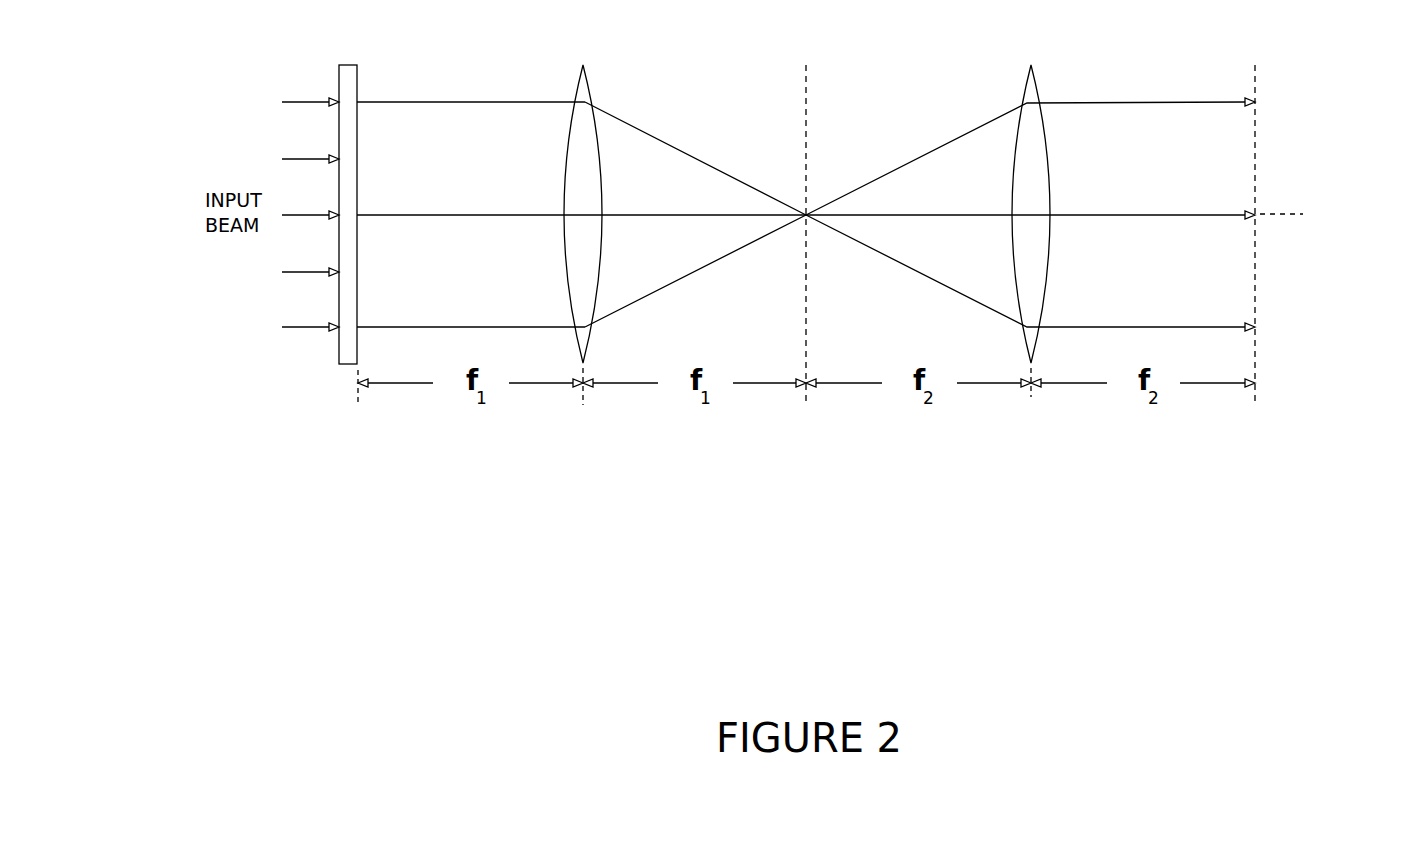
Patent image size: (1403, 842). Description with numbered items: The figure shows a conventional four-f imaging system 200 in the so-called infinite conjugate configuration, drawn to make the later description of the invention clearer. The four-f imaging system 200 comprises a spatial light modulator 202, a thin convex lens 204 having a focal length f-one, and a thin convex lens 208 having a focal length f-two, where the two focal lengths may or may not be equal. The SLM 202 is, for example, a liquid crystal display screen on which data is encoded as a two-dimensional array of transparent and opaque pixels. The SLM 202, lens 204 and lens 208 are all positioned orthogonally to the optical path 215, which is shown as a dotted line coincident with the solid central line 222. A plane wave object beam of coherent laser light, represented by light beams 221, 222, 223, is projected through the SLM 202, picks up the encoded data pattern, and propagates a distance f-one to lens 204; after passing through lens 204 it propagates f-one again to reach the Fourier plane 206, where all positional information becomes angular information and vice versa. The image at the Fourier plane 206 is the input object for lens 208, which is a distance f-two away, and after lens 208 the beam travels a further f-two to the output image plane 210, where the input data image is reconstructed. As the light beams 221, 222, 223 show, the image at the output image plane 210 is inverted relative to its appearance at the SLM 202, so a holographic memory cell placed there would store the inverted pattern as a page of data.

The 4-f imaging system 200 is at (540, 520).
The spatial light modulator 202 is at (347, 54).
The thin convex lens 204 is at (583, 54).
The Fourier plane 206 is at (806, 54).
The thin convex lens 208 is at (1031, 54).
The output image plane 210 is at (1255, 54).
The optical path 215 is at (1320, 207).
The light beam 221 is at (432, 91).
The light beam 222 is at (432, 204).
The light beam 223 is at (432, 316).